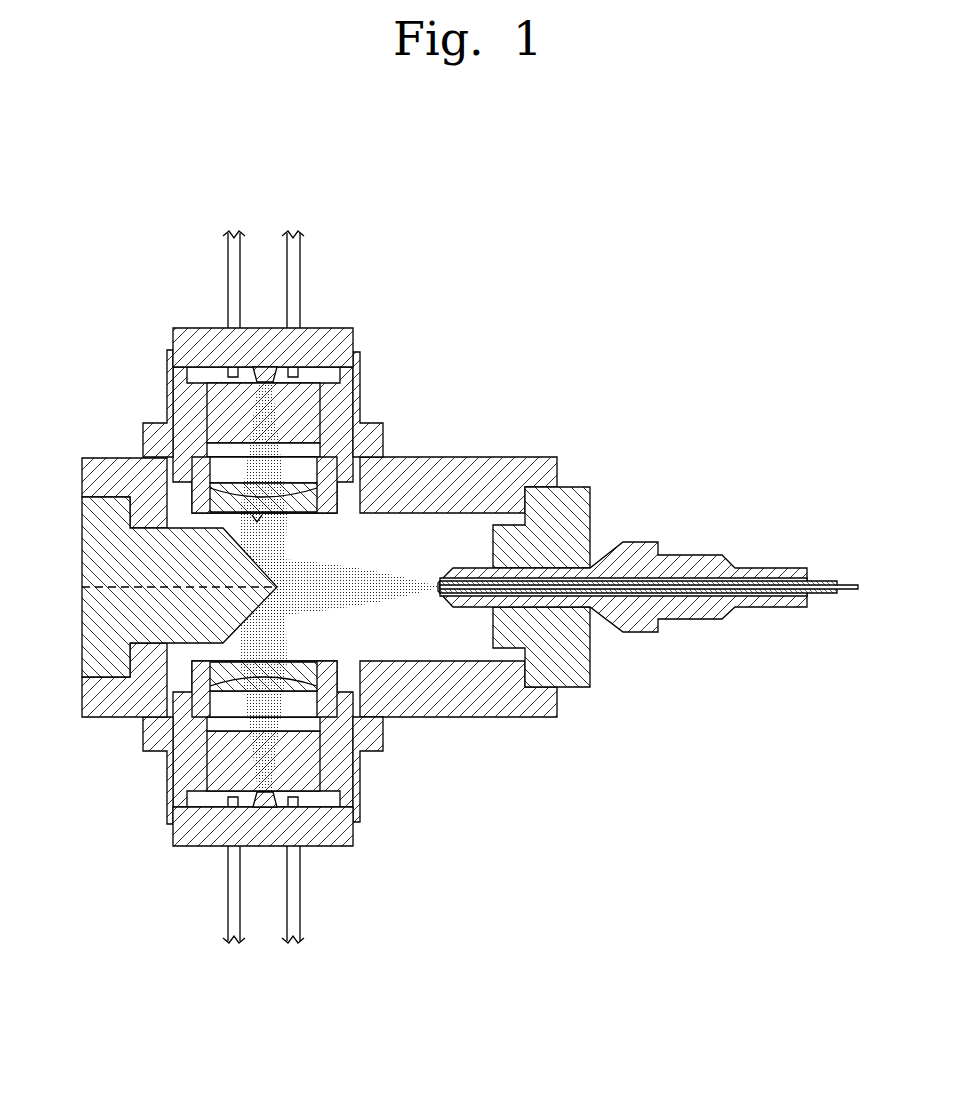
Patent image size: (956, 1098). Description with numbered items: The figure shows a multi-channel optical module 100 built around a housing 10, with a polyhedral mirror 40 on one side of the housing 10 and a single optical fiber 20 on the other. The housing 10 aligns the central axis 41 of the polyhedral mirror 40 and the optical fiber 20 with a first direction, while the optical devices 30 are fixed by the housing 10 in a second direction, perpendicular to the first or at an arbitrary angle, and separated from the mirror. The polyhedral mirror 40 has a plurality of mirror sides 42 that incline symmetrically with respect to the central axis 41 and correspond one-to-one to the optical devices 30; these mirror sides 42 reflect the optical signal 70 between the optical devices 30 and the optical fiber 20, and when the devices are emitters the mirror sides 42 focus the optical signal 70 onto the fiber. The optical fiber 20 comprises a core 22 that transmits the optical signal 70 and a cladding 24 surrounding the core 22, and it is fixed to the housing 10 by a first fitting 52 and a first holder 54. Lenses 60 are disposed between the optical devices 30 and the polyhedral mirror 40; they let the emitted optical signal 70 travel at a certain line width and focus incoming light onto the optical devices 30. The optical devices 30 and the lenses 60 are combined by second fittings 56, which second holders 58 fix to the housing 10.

The multi-channel optical module 100 is at (659, 221).
The housing 10 is at (487, 467).
The optical fiber 20 is at (661, 533).
The core 22 is at (793, 510).
The cladding 24 is at (820, 580).
The optical devices 30 is at (273, 378).
The polyhedral mirror 40 is at (95, 630).
The central axis 41 is at (105, 583).
The mirror sides 42 is at (233, 540).
The first fitting 52 is at (647, 550).
The first holder 54 is at (580, 662).
The second fittings 56 is at (345, 415).
The second holders 58 is at (383, 437).
The lenses 60 is at (298, 463).
The optical signal 70 is at (227, 437).